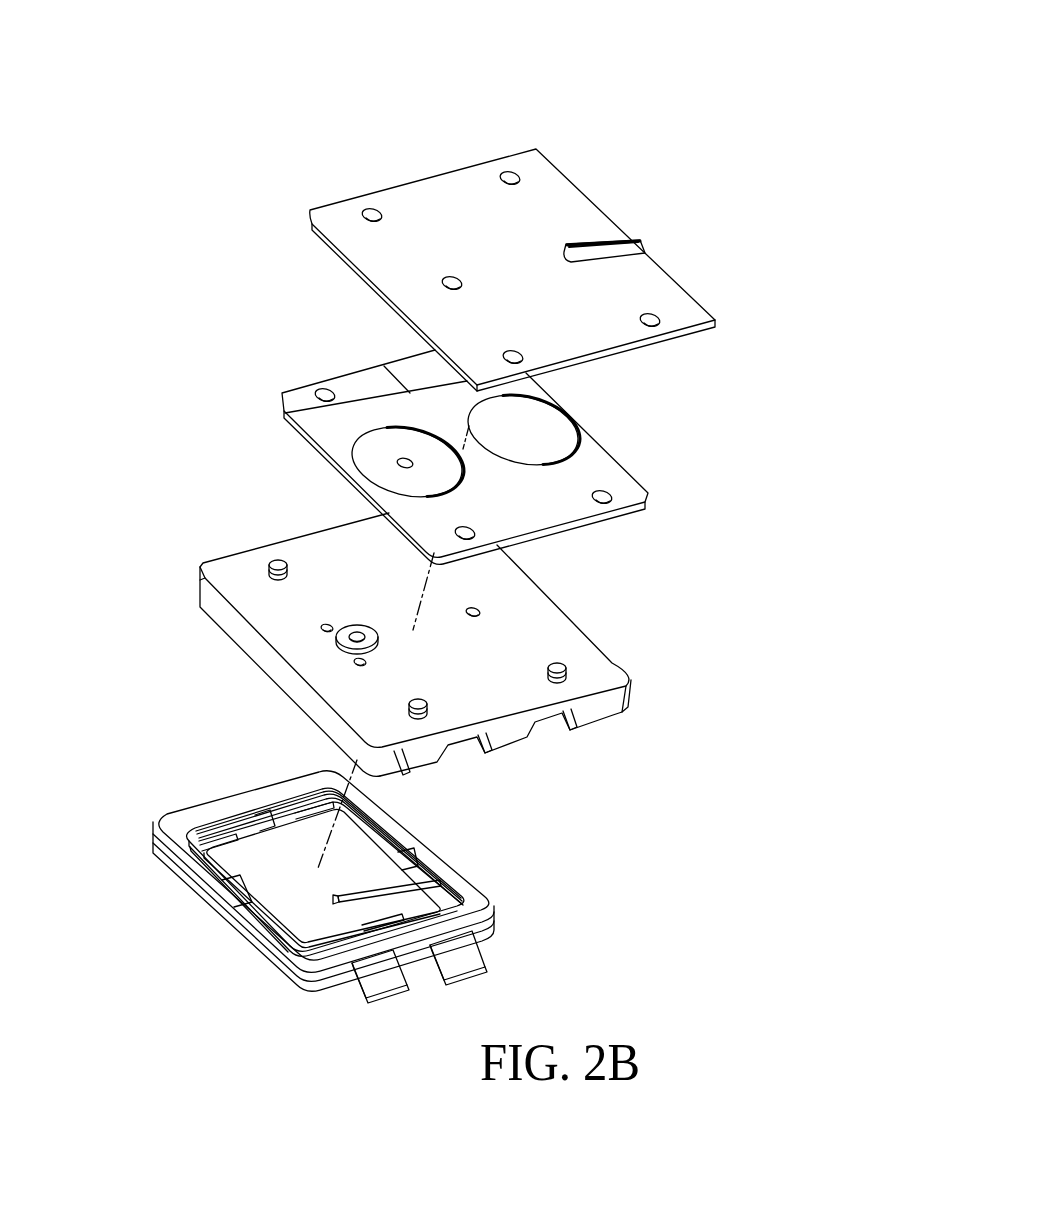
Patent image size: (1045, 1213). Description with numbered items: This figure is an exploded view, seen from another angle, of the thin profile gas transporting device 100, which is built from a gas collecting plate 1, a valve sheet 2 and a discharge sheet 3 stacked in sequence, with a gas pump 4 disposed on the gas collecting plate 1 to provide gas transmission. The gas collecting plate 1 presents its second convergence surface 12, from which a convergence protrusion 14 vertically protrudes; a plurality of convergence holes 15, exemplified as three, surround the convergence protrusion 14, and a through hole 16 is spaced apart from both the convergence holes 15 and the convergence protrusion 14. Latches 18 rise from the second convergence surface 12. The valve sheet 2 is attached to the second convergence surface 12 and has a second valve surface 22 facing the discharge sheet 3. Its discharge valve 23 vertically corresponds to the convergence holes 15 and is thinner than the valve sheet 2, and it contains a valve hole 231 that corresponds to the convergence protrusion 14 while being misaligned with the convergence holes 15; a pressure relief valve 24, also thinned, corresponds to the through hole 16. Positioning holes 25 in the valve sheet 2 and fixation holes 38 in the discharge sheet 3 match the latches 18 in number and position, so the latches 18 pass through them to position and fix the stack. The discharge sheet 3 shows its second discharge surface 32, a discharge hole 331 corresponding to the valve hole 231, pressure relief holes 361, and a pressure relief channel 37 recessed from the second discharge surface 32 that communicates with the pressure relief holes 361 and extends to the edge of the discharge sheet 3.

The thin profile gas transporting device 100 is at (490, 45).
The gas collecting plate 1 is at (430, 641).
The second convergence surface 12 is at (500, 573).
The convergence protrusion 14 is at (337, 632).
The convergence holes 15 is at (321, 628).
The through hole 16 is at (478, 610).
The latch 18 is at (273, 563).
The valve sheet 2 is at (492, 449).
The second valve surface 22 is at (598, 473).
The discharge valve 23 is at (382, 460).
The valve hole 231 is at (403, 463).
The pressure relief valve 24 is at (513, 425).
The positioning hole 25 is at (322, 393).
The discharge sheet 3 is at (519, 240).
The second discharge surface 32 is at (657, 293).
The discharge hole 331 is at (450, 283).
The pressure relief holes 361 is at (568, 247).
The pressure relief channel 37 is at (598, 246).
The fixation hole 38 is at (372, 213).
The gas pump 4 is at (483, 857).